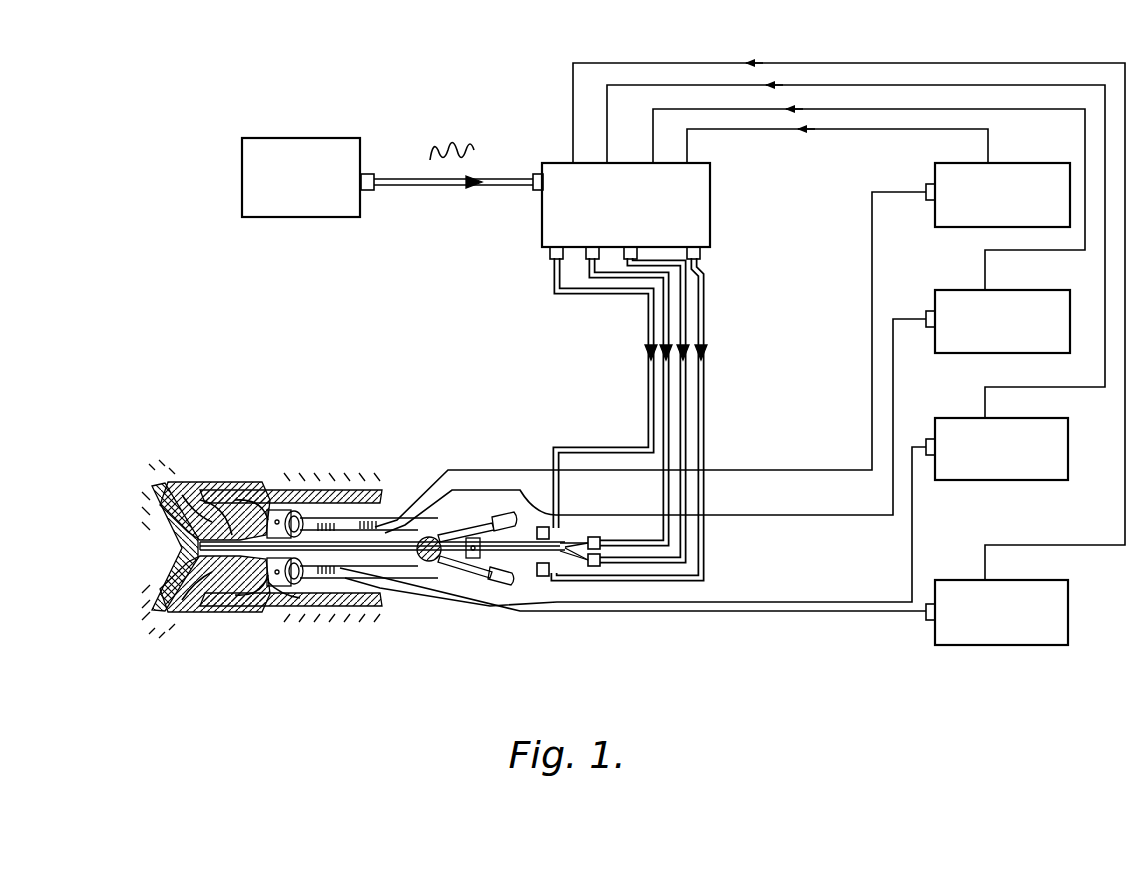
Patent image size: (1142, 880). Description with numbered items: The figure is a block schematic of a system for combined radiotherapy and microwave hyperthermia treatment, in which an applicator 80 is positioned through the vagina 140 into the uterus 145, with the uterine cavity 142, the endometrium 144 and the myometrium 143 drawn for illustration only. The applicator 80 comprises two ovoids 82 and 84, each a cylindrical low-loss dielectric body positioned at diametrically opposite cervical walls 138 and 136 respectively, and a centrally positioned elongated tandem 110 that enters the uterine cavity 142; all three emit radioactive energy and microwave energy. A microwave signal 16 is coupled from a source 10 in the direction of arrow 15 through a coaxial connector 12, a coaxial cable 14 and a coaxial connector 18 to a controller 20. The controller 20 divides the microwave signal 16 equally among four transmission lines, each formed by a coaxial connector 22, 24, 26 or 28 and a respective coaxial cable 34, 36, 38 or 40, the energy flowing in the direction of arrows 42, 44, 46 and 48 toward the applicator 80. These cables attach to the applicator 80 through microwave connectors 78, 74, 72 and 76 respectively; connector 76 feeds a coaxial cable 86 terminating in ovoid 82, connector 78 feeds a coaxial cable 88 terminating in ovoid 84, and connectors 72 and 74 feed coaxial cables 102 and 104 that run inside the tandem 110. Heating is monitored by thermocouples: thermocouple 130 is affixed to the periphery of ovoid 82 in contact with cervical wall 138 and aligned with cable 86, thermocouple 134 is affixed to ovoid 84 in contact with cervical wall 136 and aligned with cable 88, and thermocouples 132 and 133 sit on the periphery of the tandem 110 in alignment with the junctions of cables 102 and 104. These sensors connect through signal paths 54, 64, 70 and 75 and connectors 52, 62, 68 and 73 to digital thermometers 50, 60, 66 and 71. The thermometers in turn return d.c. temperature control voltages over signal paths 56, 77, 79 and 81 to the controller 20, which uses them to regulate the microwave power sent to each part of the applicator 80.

The source 10 is at (301, 138).
The coaxial connector 12 is at (369, 174).
The coaxial cable 14 is at (421, 186).
The arrow 15 is at (475, 188).
The microwave signal 16 is at (448, 142).
The coaxial connector 18 is at (536, 190).
The controller 20 is at (548, 163).
The coaxial connector 22 is at (700, 254).
The coaxial connector 24 is at (637, 253).
The coaxial connector 26 is at (585, 262).
The coaxial connector 28 is at (550, 253).
The coaxial cable 34 is at (706, 282).
The coaxial cable 36 is at (635, 275).
The coaxial cable 38 is at (590, 276).
The coaxial cable 40 is at (556, 272).
The arrow 42 is at (692, 350).
The arrow 44 is at (704, 358).
The arrow 46 is at (665, 356).
The arrow 48 is at (648, 352).
The digital thermometer 50 is at (936, 165).
The connector 52 is at (926, 200).
The signal path 54 is at (882, 192).
The signal path 56 is at (988, 138).
The digital thermometer 60 is at (946, 290).
The connector 62 is at (926, 327).
The signal path 64 is at (900, 318).
The digital thermometer 66 is at (954, 418).
The connector 68 is at (926, 455).
The signal path 70 is at (912, 543).
The digital thermometer 71 is at (957, 580).
The microwave connector 72 is at (600, 542).
The connector 73 is at (926, 620).
The microwave connector 74 is at (600, 565).
The signal path 75 is at (840, 612).
The microwave connector 76 is at (549, 532).
The signal path 77 is at (1075, 250).
The microwave connector 78 is at (543, 576).
The signal path 79 is at (1103, 387).
The applicator 80 is at (382, 510).
The signal path 81 is at (1107, 545).
The ovoid 82 is at (215, 510).
The ovoid 84 is at (276, 588).
The coaxial cable 86 is at (526, 525).
The coaxial cable 88 is at (525, 576).
The coaxial cable 102 is at (594, 540).
The coaxial cable 104 is at (594, 566).
The tandem 110 is at (194, 596).
The thermocouple 130 is at (300, 512).
The thermocouple 132 is at (228, 500).
The thermocouple 133 is at (222, 592).
The thermocouple 134 is at (300, 585).
The cervical wall 136 is at (248, 598).
The cervical wall 138 is at (256, 500).
The vagina 140 is at (362, 489).
The uterine cavity 142 is at (176, 537).
The myometrium 143 is at (137, 577).
The endometrium 144 is at (186, 492).
The uterus 145 is at (184, 466).